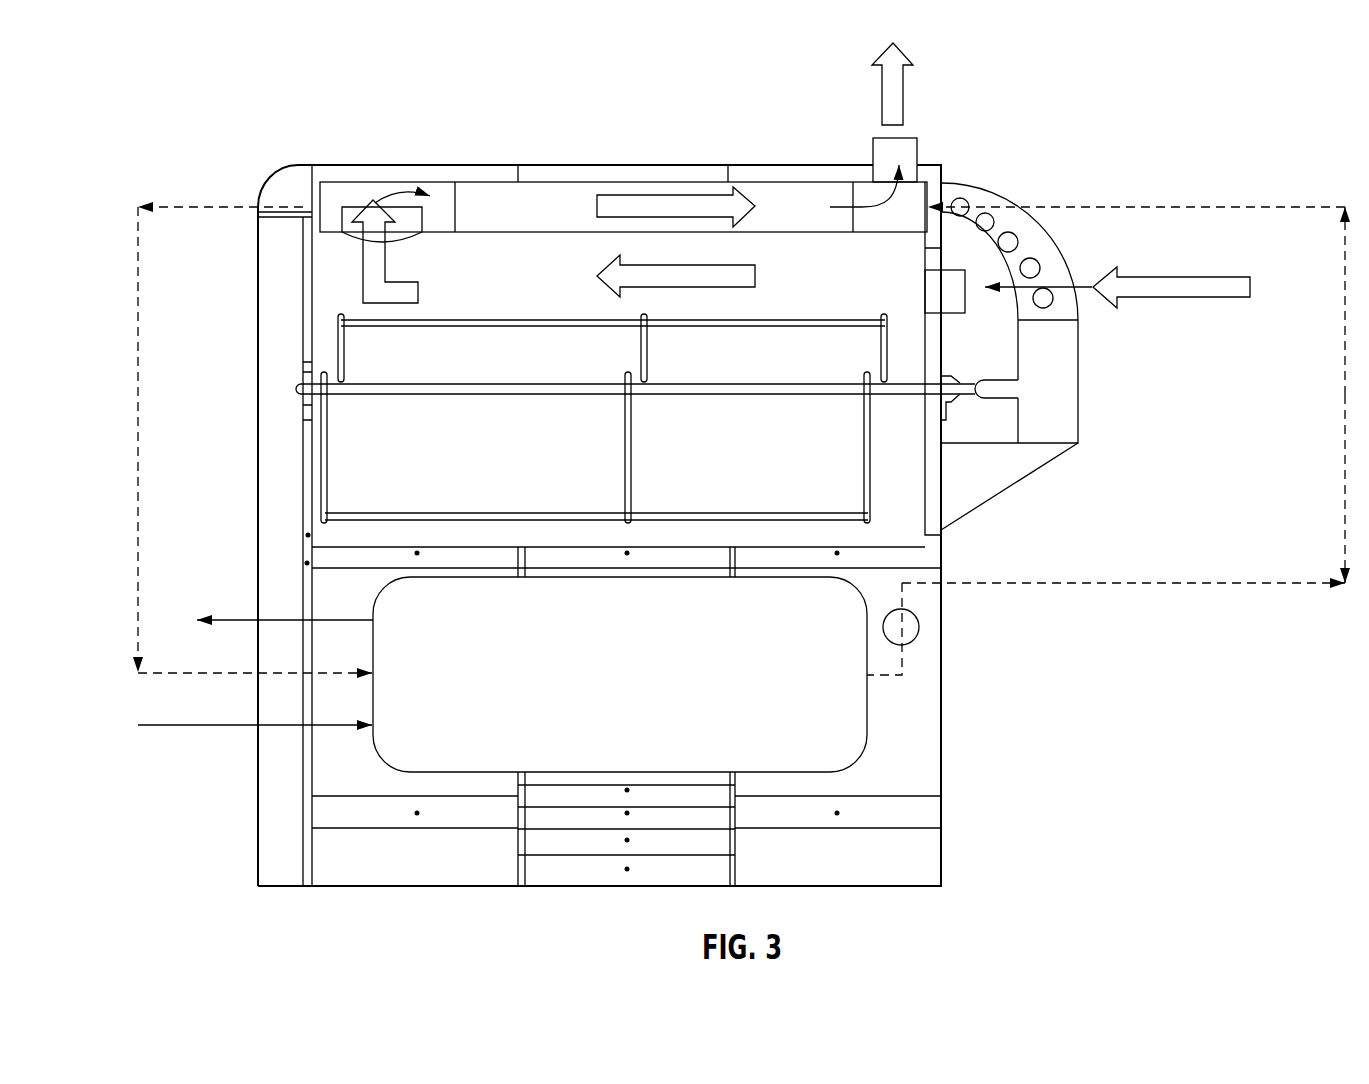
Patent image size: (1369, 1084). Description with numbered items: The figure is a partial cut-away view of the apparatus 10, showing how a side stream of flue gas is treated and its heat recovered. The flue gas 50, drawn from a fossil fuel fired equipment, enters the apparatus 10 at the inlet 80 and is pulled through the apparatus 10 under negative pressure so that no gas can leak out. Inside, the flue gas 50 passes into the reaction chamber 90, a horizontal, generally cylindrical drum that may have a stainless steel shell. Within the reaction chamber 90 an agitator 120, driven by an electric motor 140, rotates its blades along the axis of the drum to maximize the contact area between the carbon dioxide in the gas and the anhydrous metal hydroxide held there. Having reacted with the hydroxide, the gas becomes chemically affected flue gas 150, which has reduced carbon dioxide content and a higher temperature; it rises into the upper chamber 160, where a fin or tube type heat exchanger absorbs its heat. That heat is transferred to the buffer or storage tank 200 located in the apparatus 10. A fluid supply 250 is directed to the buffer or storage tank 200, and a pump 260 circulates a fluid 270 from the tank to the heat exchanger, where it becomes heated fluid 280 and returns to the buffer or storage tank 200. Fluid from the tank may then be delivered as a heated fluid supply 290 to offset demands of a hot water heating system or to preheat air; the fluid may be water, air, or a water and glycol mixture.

The apparatus 10 is at (235, 135).
The flue gas 50 is at (1183, 300).
The inlet 80 is at (977, 252).
The reaction chamber 90 is at (883, 272).
The agitator 120 is at (872, 490).
The electric motor 140 is at (1060, 422).
The chemically affected flue gas 150 is at (905, 95).
The upper chamber 160 is at (514, 206).
The buffer or storage tank 200 is at (642, 688).
The fluid supply 250 is at (185, 730).
The pump 260 is at (903, 627).
The fluid 270 is at (1158, 585).
The heated fluid 280 is at (138, 452).
The heated fluid supply 290 is at (226, 617).